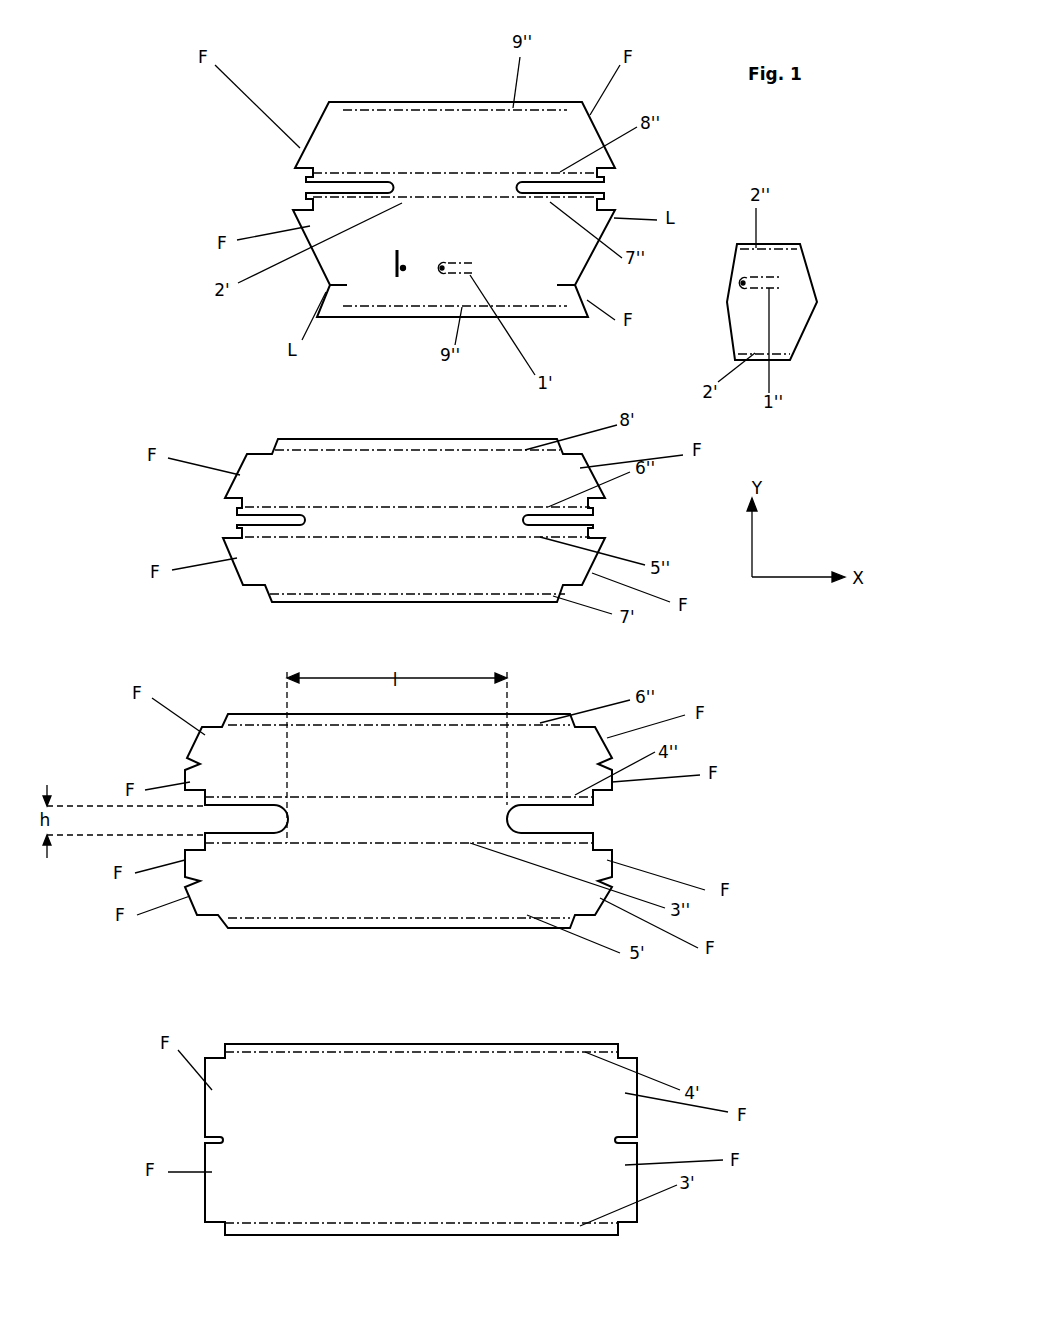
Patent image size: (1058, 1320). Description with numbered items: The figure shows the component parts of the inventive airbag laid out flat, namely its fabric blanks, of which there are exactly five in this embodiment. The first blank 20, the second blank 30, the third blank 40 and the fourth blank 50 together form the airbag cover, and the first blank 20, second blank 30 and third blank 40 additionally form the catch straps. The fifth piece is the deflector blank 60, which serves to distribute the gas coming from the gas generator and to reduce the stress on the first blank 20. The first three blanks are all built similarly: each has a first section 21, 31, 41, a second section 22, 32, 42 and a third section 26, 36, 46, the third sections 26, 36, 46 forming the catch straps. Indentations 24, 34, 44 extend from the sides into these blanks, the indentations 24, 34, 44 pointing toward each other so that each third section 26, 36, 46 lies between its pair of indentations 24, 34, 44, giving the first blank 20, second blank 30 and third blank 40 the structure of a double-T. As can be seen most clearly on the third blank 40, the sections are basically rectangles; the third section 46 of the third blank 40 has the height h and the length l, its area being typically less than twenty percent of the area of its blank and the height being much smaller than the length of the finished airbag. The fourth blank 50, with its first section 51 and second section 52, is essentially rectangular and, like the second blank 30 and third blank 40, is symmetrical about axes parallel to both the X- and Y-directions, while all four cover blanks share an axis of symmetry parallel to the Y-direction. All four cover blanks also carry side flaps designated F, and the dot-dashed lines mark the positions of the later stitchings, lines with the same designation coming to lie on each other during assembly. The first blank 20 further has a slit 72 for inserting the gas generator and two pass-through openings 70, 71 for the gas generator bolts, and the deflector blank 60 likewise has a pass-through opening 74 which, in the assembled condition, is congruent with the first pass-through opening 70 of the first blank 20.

The first blank 20 is at (262, 140).
The first section 21 is at (357, 247).
The second section 22 is at (375, 148).
The indentations 24 is at (350, 190).
The third section 26 is at (495, 185).
The pass-through opening 70 is at (444, 264).
The pass-through opening 71 is at (404, 265).
The slit 72 is at (395, 258).
The pass-through opening 74 is at (747, 276).
The deflector blank 60 is at (793, 323).
The second blank 30 is at (240, 435).
The first section 31 is at (265, 560).
The second section 32 is at (314, 475).
The indentations 34 is at (275, 519).
The third section 36 is at (400, 520).
The third blank 40 is at (655, 860).
The first section 41 is at (252, 885).
The second section 42 is at (360, 752).
The indentations 44 is at (565, 825).
The third section 46 is at (398, 820).
The fourth blank 50 is at (185, 1085).
The first section 51 is at (307, 1192).
The second section 52 is at (508, 1076).